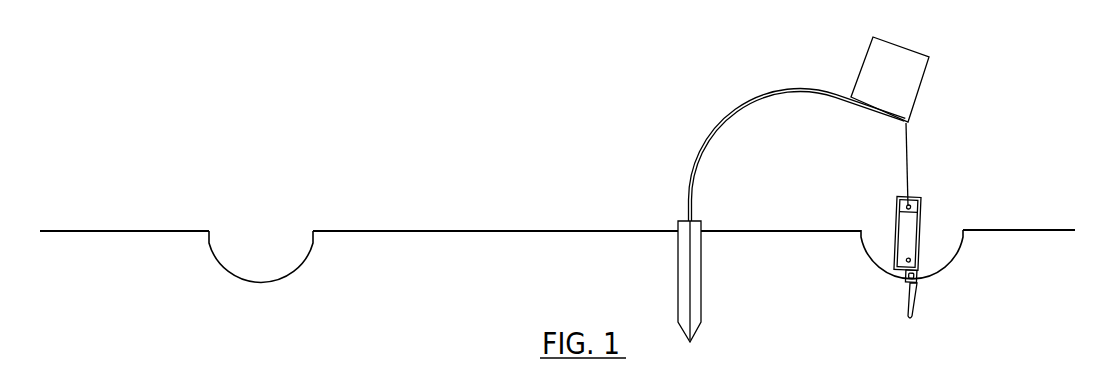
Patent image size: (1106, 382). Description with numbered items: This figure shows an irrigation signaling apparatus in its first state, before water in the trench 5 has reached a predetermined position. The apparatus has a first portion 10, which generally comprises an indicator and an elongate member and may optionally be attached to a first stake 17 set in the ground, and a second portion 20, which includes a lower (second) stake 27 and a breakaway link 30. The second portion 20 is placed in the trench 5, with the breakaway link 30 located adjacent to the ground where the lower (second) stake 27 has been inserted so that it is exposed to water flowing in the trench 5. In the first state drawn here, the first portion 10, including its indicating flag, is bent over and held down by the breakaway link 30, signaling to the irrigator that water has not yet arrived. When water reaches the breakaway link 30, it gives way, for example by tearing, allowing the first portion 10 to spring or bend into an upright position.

The trench 5 is at (308, 252).
The first portion 10 is at (716, 85).
The first stake 17 is at (695, 284).
The second portion 20 is at (940, 227).
The lower (second) stake 27 is at (915, 297).
The breakaway link 30 is at (907, 228).